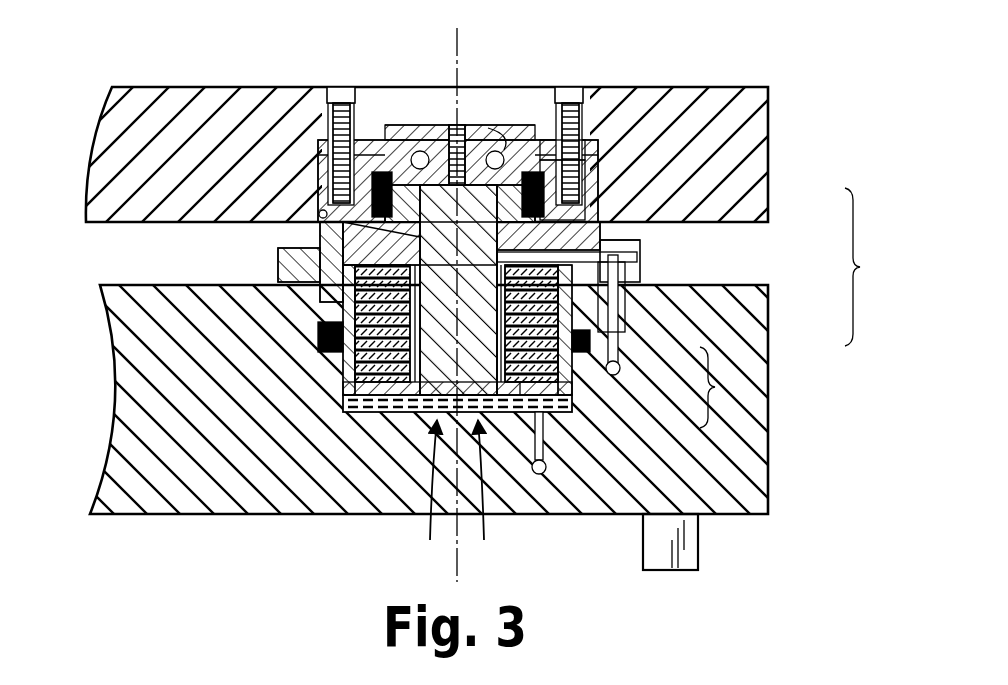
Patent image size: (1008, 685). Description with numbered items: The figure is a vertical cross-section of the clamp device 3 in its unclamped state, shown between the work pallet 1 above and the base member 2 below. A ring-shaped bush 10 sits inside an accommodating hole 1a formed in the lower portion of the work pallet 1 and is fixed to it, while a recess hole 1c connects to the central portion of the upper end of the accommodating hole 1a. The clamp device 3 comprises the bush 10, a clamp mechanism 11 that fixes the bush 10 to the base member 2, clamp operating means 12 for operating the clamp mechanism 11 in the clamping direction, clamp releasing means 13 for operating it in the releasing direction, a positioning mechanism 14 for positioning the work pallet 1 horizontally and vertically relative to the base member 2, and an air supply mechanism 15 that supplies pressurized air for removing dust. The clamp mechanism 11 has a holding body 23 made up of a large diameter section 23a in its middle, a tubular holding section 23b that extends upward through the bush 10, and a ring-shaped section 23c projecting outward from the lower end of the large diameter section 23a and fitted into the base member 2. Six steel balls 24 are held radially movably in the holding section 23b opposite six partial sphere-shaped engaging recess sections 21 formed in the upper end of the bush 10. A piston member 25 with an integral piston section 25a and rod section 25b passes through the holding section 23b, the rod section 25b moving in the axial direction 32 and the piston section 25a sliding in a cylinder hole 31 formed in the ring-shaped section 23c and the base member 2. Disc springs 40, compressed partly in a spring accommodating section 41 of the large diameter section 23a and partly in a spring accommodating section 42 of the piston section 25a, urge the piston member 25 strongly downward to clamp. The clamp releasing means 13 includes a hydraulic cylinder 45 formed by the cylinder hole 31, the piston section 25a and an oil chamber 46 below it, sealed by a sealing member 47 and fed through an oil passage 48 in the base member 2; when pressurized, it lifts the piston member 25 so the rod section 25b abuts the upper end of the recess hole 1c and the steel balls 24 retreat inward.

The work pallet 1 is at (768, 118).
The accommodating hole 1a is at (318, 213).
The recess hole 1c is at (520, 108).
The base member 2 is at (597, 517).
The clamp device 3 is at (605, 70).
The bush 10 is at (322, 166).
The clamp mechanism 11 is at (383, 104).
The clamp operating means 12 is at (340, 272).
The clamp releasing means 13 is at (496, 497).
The positioning mechanism 14 is at (590, 180).
The air supply mechanism 15 is at (356, 232).
The engaging recess sections 21 is at (586, 142).
The holding body 23 is at (874, 267).
The large diameter section 23a is at (640, 264).
The holding section 23b is at (640, 228).
The ring-shaped section 23c is at (626, 316).
The steel balls 24 is at (428, 105).
The piston member 25 is at (727, 387).
The piston section 25a is at (592, 392).
The rod section 25b is at (622, 346).
The cylinder hole 31 is at (356, 420).
The axial direction 32 is at (466, 42).
The disc springs 40 is at (342, 372).
The spring accommodating section 41 is at (455, 345).
The spring accommodating section 42 is at (400, 418).
The hydraulic cylinder 45 is at (426, 497).
The oil chamber 46 is at (511, 435).
The sealing member 47 is at (334, 338).
The oil passage 48 is at (548, 432).